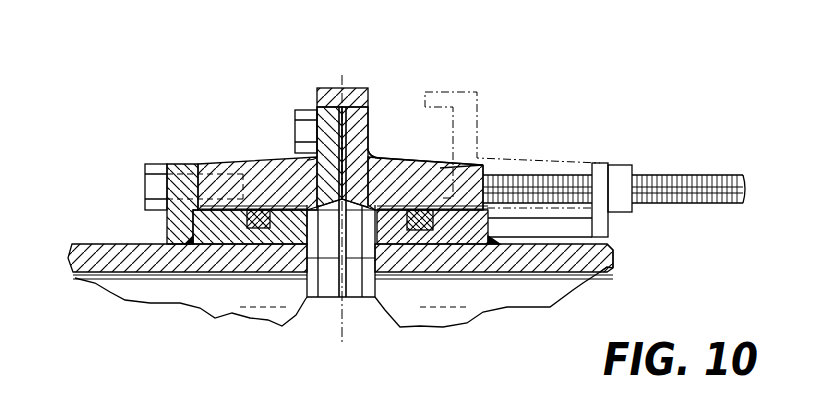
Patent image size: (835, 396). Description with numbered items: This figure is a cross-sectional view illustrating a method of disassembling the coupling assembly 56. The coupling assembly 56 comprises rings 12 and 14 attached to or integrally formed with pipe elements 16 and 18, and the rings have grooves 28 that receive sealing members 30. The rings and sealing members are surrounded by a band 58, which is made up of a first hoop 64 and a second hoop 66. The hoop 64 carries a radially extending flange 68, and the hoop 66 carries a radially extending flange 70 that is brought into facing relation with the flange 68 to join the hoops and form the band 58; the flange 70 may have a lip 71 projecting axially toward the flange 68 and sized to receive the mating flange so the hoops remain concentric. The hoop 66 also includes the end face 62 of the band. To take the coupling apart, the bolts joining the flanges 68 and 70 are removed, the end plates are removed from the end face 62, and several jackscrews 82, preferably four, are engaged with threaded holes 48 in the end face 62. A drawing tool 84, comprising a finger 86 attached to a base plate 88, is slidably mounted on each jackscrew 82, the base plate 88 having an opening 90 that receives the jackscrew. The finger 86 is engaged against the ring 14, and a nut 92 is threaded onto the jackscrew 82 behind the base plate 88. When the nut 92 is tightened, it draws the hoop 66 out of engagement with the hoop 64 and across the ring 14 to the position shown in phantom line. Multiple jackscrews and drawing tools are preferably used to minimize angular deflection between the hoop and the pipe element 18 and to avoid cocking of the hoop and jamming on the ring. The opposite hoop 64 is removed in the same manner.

The ring 12 is at (212, 237).
The ring 14 is at (493, 241).
The pipe element 16 is at (113, 263).
The pipe element 18 is at (613, 255).
The groove 28 is at (285, 242).
The sealing member 30 is at (262, 238).
The threaded hole 48 is at (463, 172).
The coupling assembly 56 is at (578, 92).
The band 58 is at (282, 167).
The end face 62 is at (490, 164).
The first hoop 64 is at (243, 168).
The second hoop 66 is at (381, 159).
The flange 68 is at (317, 112).
The flange 70 is at (360, 100).
The lip 71 is at (323, 90).
The jackscrew 82 is at (678, 176).
The drawing tool 84 is at (606, 237).
The finger 86 is at (610, 263).
The base plate 88 is at (610, 223).
The opening 90 is at (606, 172).
The nut 92 is at (623, 165).